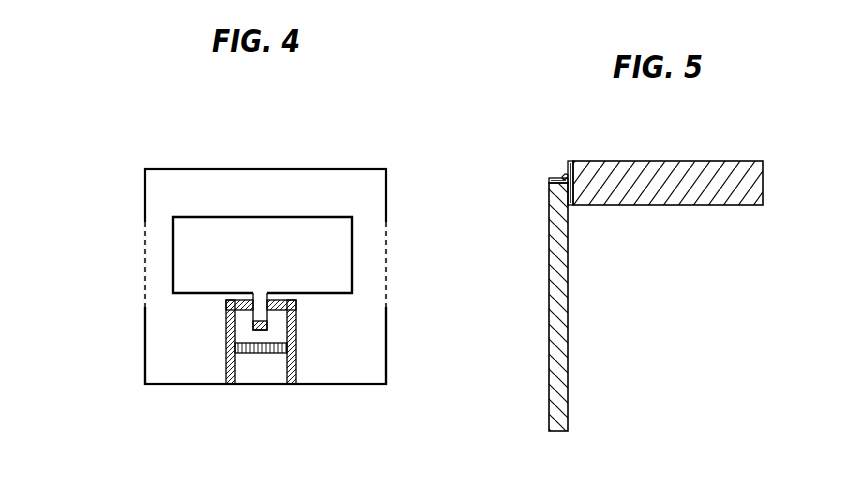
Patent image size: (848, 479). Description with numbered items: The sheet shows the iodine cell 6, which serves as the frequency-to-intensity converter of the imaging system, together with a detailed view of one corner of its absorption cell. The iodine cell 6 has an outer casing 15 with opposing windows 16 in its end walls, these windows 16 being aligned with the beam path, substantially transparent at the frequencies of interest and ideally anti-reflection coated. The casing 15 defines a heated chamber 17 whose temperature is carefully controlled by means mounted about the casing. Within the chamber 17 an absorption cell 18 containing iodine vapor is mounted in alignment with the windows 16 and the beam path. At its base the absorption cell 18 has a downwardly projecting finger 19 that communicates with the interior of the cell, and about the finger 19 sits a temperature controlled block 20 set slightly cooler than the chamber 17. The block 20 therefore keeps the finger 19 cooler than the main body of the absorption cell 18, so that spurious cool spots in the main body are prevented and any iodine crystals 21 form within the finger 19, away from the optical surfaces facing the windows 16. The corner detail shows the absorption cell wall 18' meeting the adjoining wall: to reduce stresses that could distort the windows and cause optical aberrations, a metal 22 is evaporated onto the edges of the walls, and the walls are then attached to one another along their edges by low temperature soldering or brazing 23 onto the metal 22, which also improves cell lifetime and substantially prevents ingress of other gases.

In FIG. 4, the iodine cell 6 is at (187, 160).
In FIG. 4, the outer casing 15 is at (145, 343).
In FIG. 4, the windows 16 is at (143, 277).
In FIG. 4, the heated chamber 17 is at (153, 189).
In FIG. 4, the absorption cell 18 is at (290, 182).
In FIG. 4, the finger 19 is at (262, 303).
In FIG. 4, the temperature controlled block 20 is at (280, 333).
In FIG. 4, the iodine crystals 21 is at (253, 325).
In FIG. 5, the wall 18' is at (533, 307).
In FIG. 5, the metal 22 is at (571, 160).
In FIG. 5, the low temperature soldering/brazing 23 is at (565, 174).